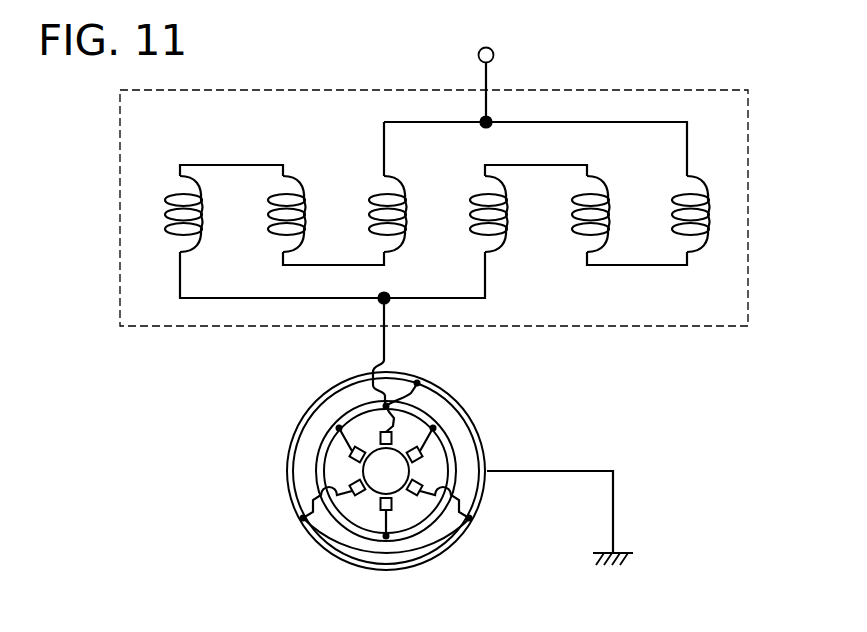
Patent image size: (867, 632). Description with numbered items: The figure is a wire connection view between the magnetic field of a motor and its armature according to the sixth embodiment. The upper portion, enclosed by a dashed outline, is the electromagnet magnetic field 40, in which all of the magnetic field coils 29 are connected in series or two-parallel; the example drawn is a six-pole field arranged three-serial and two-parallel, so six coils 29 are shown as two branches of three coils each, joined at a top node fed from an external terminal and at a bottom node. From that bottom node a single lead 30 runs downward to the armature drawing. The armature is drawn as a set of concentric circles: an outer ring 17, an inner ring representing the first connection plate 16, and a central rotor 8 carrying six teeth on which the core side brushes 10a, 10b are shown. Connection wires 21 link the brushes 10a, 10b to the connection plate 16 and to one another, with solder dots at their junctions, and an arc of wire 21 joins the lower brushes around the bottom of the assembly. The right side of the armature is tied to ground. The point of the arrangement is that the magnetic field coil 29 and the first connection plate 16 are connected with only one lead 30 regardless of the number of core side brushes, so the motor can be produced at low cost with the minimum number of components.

The rotor 8 is at (392, 460).
The coil 10a is at (360, 462).
The coil 10b is at (416, 482).
The first connection plate 16 is at (416, 528).
The housing 17 is at (333, 550).
The connection wire 21 is at (344, 437).
The magnetic field coil 29 is at (708, 220).
The lead 30 is at (384, 340).
The electromagnet magnetic field 40 is at (637, 89).